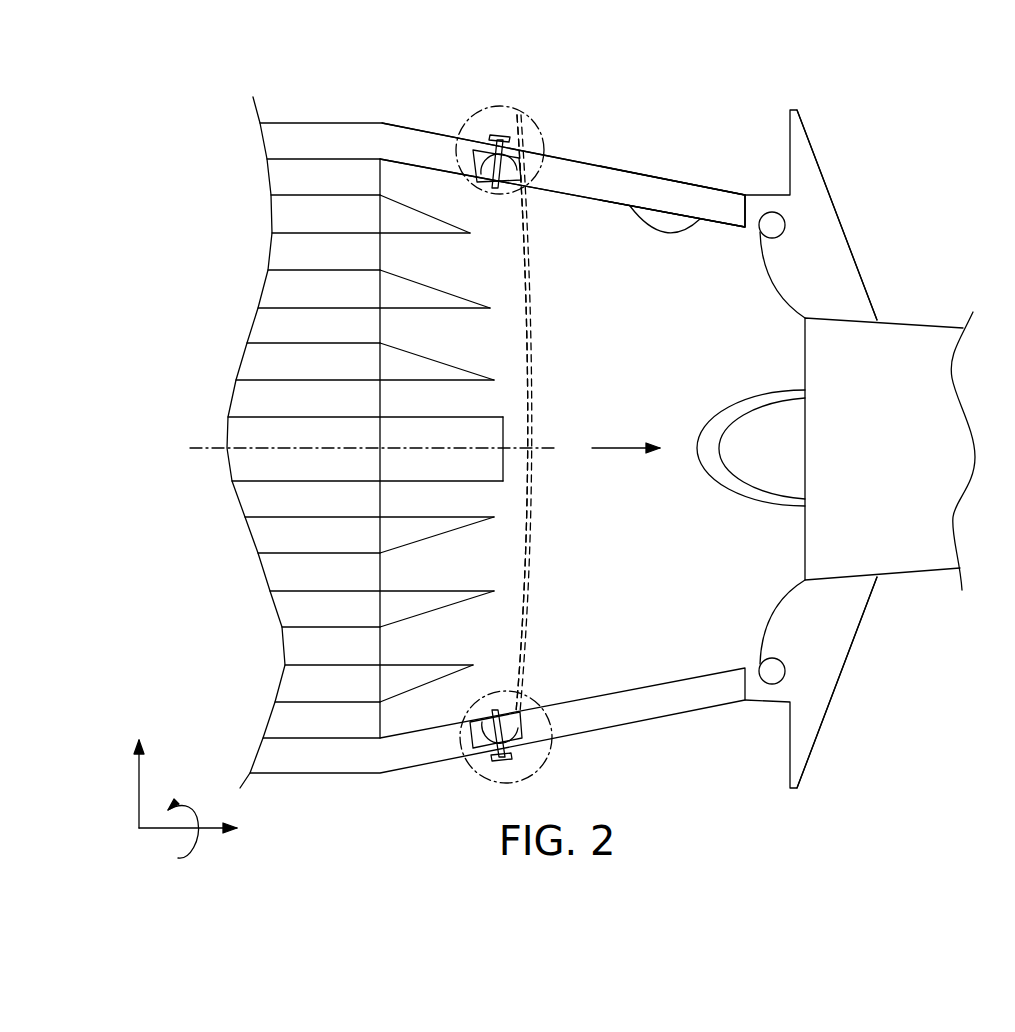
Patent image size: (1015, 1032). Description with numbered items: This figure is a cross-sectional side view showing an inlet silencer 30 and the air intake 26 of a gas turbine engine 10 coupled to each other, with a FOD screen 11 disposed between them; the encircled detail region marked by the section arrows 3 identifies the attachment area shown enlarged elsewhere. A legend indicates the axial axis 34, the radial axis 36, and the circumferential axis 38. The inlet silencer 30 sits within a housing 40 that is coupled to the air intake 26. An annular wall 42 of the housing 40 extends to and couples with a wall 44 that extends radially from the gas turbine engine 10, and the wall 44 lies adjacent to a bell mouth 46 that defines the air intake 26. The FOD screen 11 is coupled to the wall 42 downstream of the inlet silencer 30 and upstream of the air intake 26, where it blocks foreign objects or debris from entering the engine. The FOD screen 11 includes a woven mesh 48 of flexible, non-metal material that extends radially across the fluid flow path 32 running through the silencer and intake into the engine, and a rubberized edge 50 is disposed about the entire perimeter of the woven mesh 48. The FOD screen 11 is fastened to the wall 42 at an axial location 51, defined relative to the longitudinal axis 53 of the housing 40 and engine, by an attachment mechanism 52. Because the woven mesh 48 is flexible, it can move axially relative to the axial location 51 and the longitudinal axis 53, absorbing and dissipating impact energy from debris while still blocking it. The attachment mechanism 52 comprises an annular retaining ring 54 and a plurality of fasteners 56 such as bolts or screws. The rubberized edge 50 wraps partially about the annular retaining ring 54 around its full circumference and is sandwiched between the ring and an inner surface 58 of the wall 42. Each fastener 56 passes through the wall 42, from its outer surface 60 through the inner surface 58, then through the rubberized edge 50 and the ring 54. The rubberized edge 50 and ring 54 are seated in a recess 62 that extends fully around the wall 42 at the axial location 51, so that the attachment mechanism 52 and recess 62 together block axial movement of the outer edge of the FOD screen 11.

The gas turbine engine 10 is at (842, 444).
The FOD screen 11 is at (537, 370).
The air intake 26 is at (773, 337).
The inlet silencer 30 is at (283, 290).
The fluid flow path 32 is at (596, 450).
The axial axis or direction 34 is at (160, 833).
The radial axis or direction 36 is at (139, 790).
The circumferential axis or direction 38 is at (197, 812).
The housing 40 is at (320, 123).
The wall 42 is at (625, 168).
The wall 44 is at (815, 168).
The bell mouth 46 is at (773, 273).
The woven mesh 48 is at (530, 425).
The rubberized edge 50 is at (516, 137).
The axial location 51 is at (518, 766).
The attachment mechanism 52 is at (490, 110).
The longitudinal axis 53 is at (212, 447).
The annular retaining ring 54 is at (458, 163).
The fasteners 56 is at (497, 135).
The inner surface 58 is at (688, 218).
The outer surface 60 is at (662, 177).
The recess 62 is at (528, 174).
The section line 3- 3 is at (458, 180).